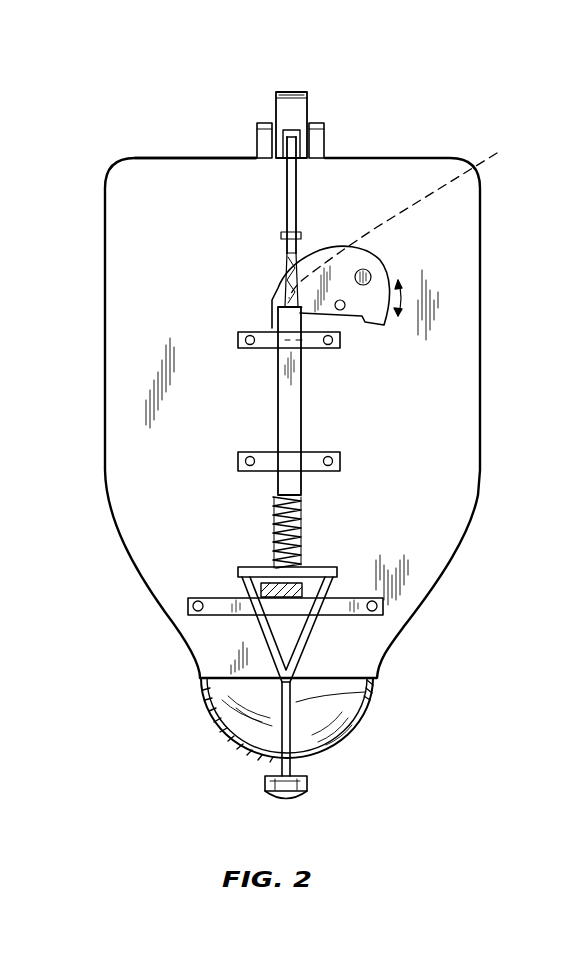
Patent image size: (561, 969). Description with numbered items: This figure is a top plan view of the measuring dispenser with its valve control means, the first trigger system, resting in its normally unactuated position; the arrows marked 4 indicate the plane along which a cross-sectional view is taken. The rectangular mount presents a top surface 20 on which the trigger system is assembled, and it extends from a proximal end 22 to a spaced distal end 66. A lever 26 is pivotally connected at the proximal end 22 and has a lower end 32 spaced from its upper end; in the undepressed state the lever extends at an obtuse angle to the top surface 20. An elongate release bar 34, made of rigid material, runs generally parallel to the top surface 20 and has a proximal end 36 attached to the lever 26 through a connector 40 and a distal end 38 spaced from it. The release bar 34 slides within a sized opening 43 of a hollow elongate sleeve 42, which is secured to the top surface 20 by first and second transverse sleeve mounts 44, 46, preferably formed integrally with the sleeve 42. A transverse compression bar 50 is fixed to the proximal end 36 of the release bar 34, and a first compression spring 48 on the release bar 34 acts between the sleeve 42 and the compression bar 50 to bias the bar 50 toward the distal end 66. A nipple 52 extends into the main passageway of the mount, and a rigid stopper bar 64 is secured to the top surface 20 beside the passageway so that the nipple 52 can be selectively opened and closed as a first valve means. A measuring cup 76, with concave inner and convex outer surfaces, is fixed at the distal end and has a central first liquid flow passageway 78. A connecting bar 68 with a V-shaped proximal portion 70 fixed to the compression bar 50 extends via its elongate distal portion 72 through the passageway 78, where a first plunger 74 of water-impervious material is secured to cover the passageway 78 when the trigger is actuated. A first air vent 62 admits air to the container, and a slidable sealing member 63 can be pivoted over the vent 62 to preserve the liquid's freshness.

The section line 4- 4 is at (292, 78).
The top surface 20 is at (447, 287).
The proximal end 22 is at (213, 157).
The lever 26 is at (306, 105).
The lower end 32 is at (288, 90).
The elongate release bar 34 is at (283, 263).
The proximal end 36 is at (285, 277).
The distal end 38 is at (293, 560).
The connector 40 is at (300, 195).
The hollow elongate sleeve 42 is at (288, 417).
The sized opening 43 is at (282, 298).
The first transverse sleeve mount 44 is at (266, 332).
The second transverse sleeve mount 46 is at (266, 462).
The first compression spring 48 is at (293, 520).
The transverse compression bar 50 is at (242, 567).
The nipple 52 is at (262, 614).
The first air vent 62 is at (408, 222).
The sealing member 63 is at (340, 268).
The rigid stopper bar 64 is at (218, 604).
The distal end 66 is at (215, 683).
The connecting bar 68 is at (365, 700).
The V-shaped proximal portion 70 is at (298, 640).
The elongate distal portion 72 is at (267, 778).
The first plunger 74 is at (307, 784).
The measuring cup 76 is at (370, 722).
The first liquid flow passageway 78 is at (280, 752).